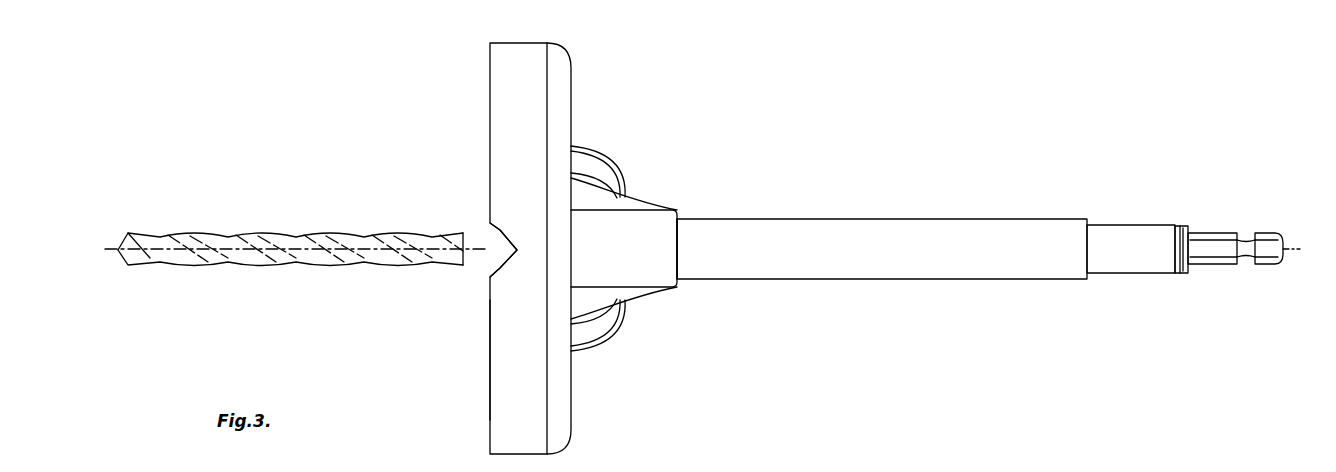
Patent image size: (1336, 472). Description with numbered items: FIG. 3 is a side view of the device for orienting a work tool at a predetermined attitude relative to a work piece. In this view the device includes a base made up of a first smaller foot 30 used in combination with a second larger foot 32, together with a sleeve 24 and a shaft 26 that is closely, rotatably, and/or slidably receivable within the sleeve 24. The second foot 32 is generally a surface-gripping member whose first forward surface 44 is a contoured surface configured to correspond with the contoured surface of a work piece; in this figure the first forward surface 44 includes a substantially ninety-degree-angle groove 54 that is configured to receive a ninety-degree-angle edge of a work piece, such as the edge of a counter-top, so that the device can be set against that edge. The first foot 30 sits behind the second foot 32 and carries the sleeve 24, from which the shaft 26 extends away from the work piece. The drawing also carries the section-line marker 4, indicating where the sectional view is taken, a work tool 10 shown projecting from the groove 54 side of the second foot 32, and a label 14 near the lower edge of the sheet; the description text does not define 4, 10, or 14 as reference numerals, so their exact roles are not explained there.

The section line 4- 4 is at (88, 220).
The drill bit 10 is at (342, 233).
The drill guide assembly 14 is at (747, 468).
The sleeve 24 is at (875, 219).
The shaft 26 is at (1127, 225).
The first foot 30 is at (615, 170).
The second foot 32 is at (537, 43).
The first forward surface 44 is at (492, 368).
The 90-angle groove 54 is at (500, 240).